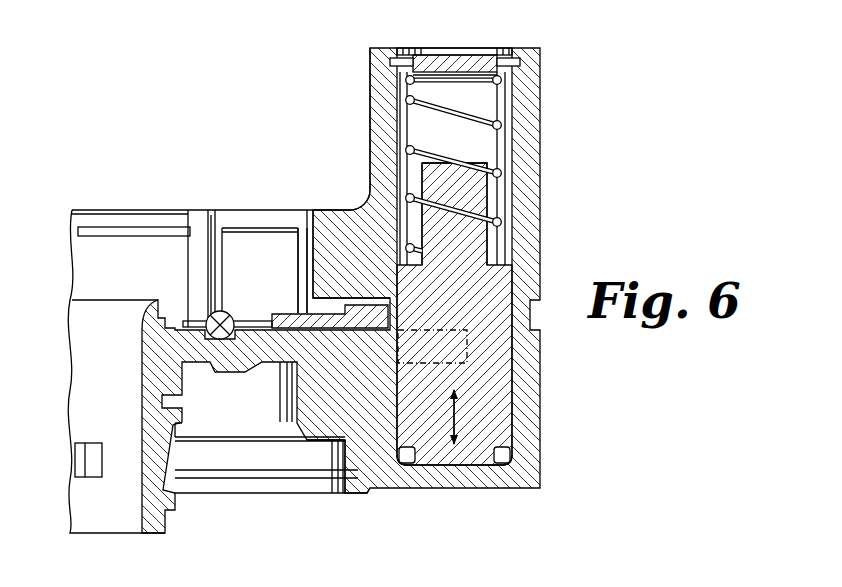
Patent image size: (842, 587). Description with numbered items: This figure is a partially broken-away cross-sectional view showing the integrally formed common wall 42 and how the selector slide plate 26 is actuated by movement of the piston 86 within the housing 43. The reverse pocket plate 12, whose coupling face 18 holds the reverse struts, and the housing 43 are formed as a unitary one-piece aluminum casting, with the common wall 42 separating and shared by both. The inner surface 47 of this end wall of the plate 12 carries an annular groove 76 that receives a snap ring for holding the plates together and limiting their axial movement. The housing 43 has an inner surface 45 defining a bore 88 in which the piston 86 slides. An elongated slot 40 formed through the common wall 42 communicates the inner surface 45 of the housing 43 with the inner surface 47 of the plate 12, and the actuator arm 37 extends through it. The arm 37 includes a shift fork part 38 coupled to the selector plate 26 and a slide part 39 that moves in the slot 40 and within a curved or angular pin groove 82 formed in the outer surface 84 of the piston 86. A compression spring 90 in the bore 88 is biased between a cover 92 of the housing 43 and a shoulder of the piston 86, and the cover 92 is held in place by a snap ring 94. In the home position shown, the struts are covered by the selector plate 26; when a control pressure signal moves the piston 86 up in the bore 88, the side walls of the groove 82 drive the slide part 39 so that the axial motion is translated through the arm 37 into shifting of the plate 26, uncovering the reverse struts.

The reverse pocket plate 12 is at (200, 206).
The coupling face 18 is at (252, 332).
The selector slide plate 26 is at (249, 316).
The actuator arm 37 is at (289, 305).
The shift fork part 38 is at (352, 298).
The slide part 39 is at (392, 322).
The elongated slot 40 is at (372, 308).
The common wall 42 is at (305, 218).
The housing 43 is at (544, 143).
The inner surface 45 is at (405, 118).
The inner surface 47 is at (303, 285).
The annular groove 76 is at (130, 230).
The pin groove 82 is at (407, 336).
The outer surface 84 is at (392, 272).
The piston 86 is at (518, 432).
The bore 88 is at (463, 140).
The compression spring 90 is at (482, 108).
The cover 92 is at (452, 55).
The snap ring 94 is at (392, 62).